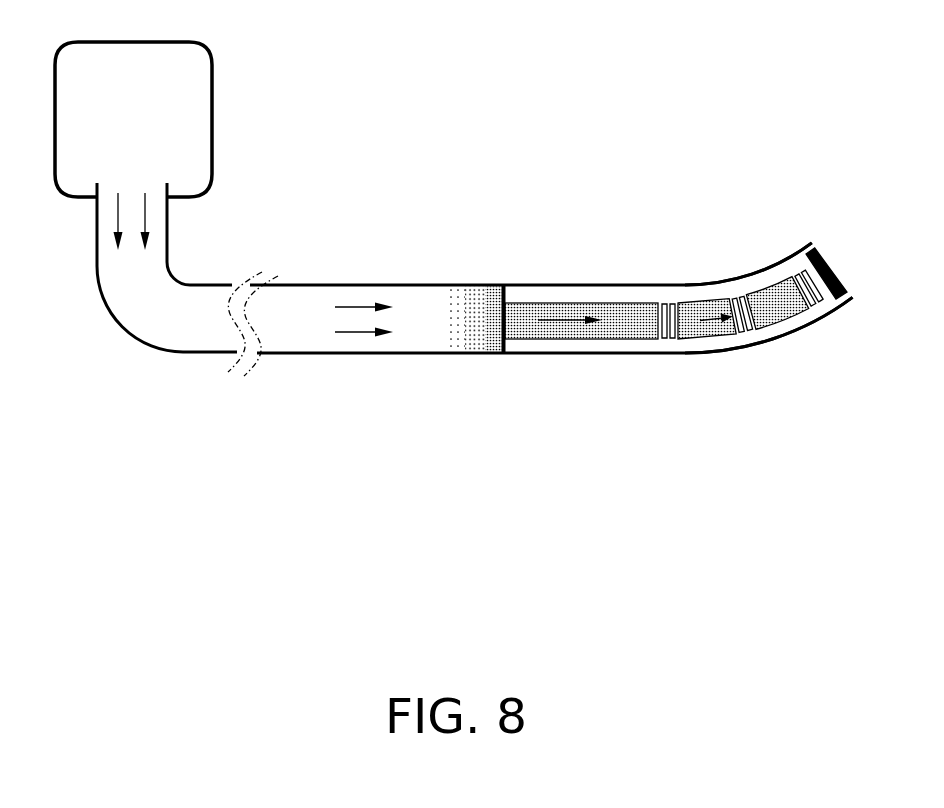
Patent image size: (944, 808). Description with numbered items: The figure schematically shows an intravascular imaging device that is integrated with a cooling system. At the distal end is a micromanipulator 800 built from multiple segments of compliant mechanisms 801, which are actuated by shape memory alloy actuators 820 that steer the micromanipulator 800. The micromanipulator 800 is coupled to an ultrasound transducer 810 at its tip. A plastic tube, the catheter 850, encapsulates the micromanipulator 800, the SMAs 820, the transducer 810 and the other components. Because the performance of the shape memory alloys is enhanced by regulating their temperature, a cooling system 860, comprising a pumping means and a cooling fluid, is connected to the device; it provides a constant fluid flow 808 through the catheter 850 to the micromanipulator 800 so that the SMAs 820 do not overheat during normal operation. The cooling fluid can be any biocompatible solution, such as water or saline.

The cooling system 860 is at (193, 102).
The fluid flow 808 is at (145, 212).
The catheter 850 is at (552, 357).
The shape memory alloy actuators 820 is at (620, 310).
The compliant mechanisms 801 is at (818, 304).
The ultrasound transducer 810 is at (827, 232).
The micromanipulator 800 is at (761, 280).